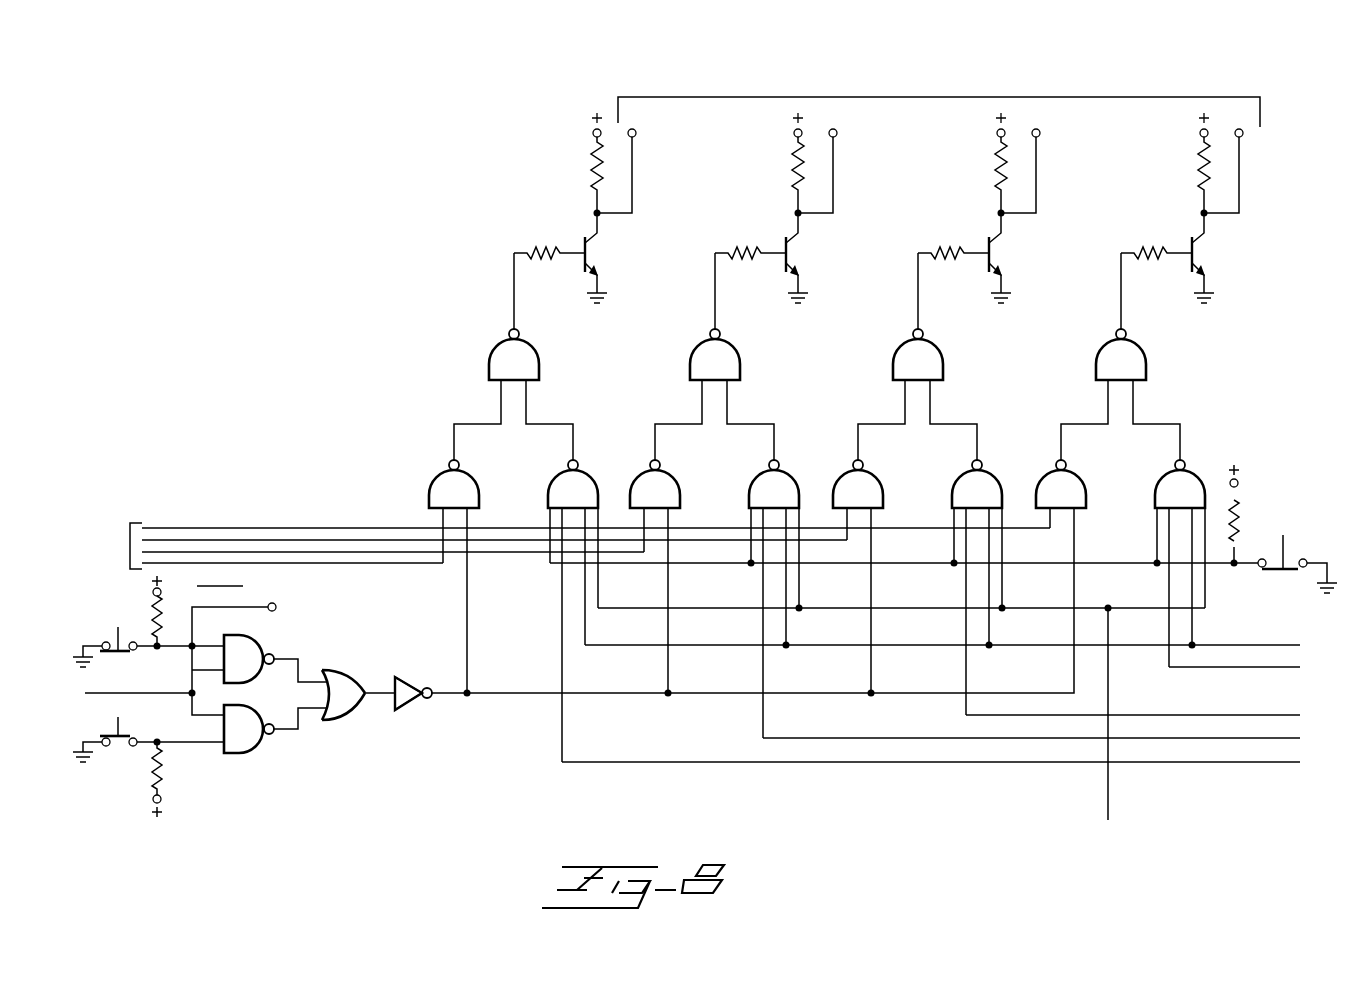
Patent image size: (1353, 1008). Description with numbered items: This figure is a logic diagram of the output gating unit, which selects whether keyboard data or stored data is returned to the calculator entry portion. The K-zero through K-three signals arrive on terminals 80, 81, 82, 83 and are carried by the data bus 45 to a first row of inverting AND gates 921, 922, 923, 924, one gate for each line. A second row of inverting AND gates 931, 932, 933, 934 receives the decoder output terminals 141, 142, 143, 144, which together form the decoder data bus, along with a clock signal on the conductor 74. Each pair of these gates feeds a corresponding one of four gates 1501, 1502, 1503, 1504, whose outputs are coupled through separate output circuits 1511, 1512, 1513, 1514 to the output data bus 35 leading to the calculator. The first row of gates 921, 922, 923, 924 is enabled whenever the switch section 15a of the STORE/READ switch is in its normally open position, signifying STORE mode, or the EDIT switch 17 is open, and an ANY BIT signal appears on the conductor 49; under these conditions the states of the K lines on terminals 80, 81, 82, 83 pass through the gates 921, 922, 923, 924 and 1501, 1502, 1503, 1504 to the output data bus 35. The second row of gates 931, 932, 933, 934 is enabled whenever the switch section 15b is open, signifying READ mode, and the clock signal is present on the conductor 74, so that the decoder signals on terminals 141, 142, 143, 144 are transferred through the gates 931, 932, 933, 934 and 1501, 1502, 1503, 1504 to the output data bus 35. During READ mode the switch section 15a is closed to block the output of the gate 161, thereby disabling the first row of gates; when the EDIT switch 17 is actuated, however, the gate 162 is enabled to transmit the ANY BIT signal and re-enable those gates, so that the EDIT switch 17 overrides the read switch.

The output data bus 35 is at (921, 97).
The output circuit 1511 is at (590, 237).
The output circuit 1512 is at (790, 237).
The output circuit 1513 is at (993, 237).
The output circuit 1514 is at (1196, 237).
The gate 1501 is at (530, 361).
The gate 1502 is at (731, 361).
The gate 1503 is at (934, 361).
The gate 1504 is at (1137, 361).
The inverting AND gate 921 is at (462, 487).
The inverting AND gate 922 is at (652, 480).
The inverting AND gate 923 is at (855, 480).
The inverting AND gate 924 is at (1058, 480).
The inverting AND gate 931 is at (566, 490).
The inverting AND gate 932 is at (767, 490).
The inverting AND gate 933 is at (971, 490).
The inverting AND gate 934 is at (1174, 490).
The data bus 45 is at (130, 548).
The terminal 80 is at (345, 564).
The terminal 81 is at (192, 552).
The terminal 82 is at (265, 540).
The terminal 83 is at (346, 528).
The EDIT switch 17 is at (111, 643).
The section of STORE/READ switch 15a is at (130, 736).
The section of STORE/READ switch 15b is at (1290, 562).
The conductor 49 is at (85, 693).
The gate 162 is at (252, 653).
The gate 161 is at (247, 742).
The conductor 74 is at (1207, 645).
The output terminal 141 is at (1268, 763).
The output terminal 142 is at (1243, 738).
The output terminal 143 is at (1238, 715).
The output terminal 144 is at (1220, 668).